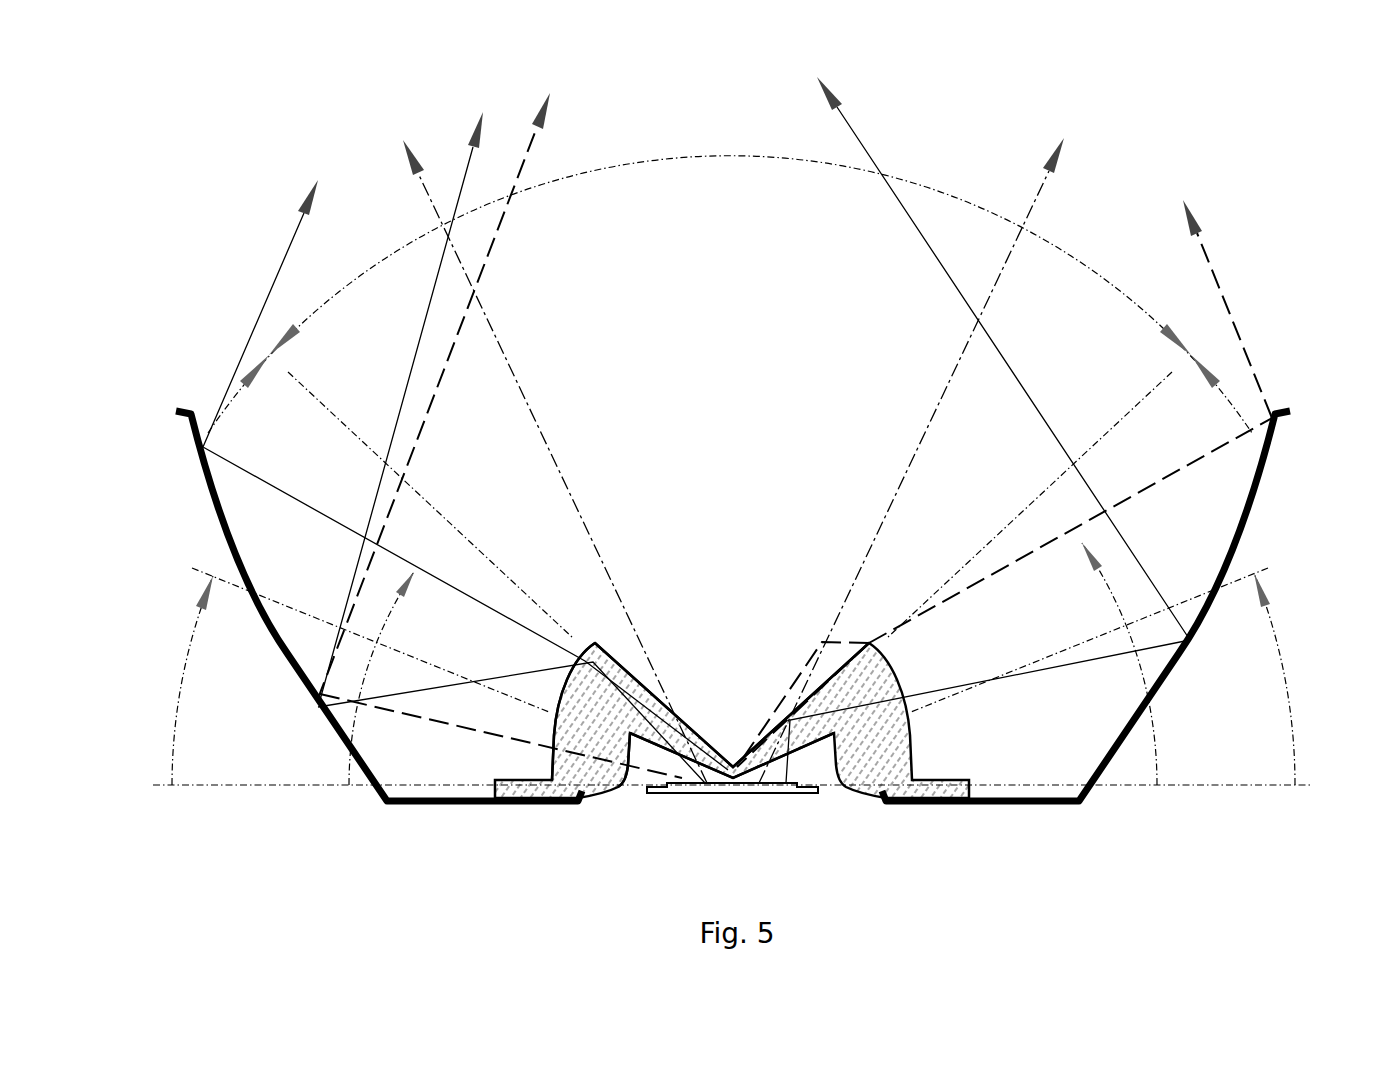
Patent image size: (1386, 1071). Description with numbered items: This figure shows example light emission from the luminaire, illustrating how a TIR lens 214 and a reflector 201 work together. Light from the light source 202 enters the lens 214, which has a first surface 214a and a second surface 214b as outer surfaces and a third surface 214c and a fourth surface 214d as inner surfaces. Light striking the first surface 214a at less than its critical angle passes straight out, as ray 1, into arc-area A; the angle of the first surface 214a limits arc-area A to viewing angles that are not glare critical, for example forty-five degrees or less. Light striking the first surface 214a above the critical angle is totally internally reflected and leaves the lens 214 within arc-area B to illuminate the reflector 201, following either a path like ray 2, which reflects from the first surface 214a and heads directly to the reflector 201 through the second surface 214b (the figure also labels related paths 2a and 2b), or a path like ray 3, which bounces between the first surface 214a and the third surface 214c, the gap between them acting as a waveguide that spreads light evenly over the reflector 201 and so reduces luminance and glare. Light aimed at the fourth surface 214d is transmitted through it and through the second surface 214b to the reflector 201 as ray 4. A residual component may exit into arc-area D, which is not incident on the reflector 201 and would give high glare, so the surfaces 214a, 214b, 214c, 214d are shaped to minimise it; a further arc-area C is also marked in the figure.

The reflector 201 is at (184, 411).
The light source 202 is at (782, 793).
The lens 214 is at (853, 750).
The first surface 214a is at (695, 735).
The second surface 214b is at (587, 647).
The third surface 214c is at (652, 740).
The fourth surface 214d is at (682, 782).
The ray 1 is at (733, 460).
The ray 2 is at (465, 475).
The ray 3 is at (511, 447).
The ray 4 is at (499, 435).
The light ray 2a is at (988, 430).
The light ray 2b is at (1004, 483).
The arc-area A is at (730, 261).
The arc-area B is at (753, 664).
The angular region C is at (732, 676).
The arc-area D is at (730, 496).